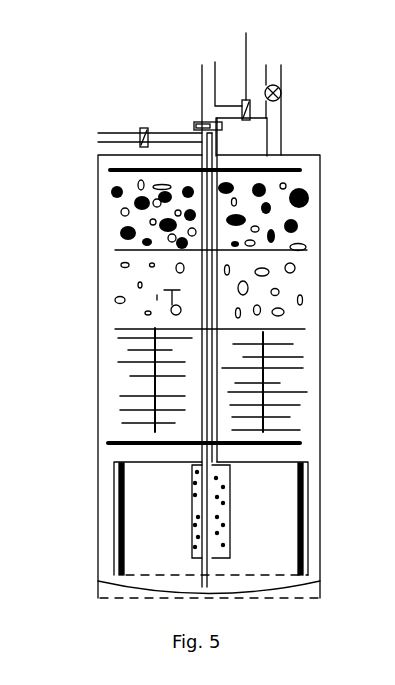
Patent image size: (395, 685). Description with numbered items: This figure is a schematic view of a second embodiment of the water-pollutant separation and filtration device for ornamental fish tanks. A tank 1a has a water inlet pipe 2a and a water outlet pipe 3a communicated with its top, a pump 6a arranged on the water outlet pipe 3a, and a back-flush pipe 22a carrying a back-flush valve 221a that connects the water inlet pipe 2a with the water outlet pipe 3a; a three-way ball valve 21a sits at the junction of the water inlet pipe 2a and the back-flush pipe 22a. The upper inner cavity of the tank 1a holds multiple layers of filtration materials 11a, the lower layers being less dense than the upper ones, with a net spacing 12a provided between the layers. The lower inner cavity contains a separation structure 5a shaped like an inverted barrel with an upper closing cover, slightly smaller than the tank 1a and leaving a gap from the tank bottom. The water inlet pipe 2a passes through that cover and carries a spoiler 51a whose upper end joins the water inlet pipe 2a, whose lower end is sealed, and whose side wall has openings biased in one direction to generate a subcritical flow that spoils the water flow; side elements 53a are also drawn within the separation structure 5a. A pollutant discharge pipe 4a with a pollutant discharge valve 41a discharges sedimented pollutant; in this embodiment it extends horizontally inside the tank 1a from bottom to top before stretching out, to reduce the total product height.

The tank 1a is at (98, 265).
The water inlet pipe 2a is at (202, 85).
The three-way ball valve 21a is at (195, 122).
The back-flush pipe 22a is at (228, 110).
The back-flush valve 221a is at (267, 67).
The water outlet pipe 3a is at (281, 137).
The pollutant discharge pipe 4a is at (125, 134).
The pollutant discharge valve 41a is at (141, 130).
The separation structure 5a is at (307, 467).
The spoiler 51a is at (232, 492).
The side plate 53a is at (302, 543).
The pump 6a is at (279, 90).
The filtration materials 11a is at (265, 277).
The net spacing 12a is at (302, 170).